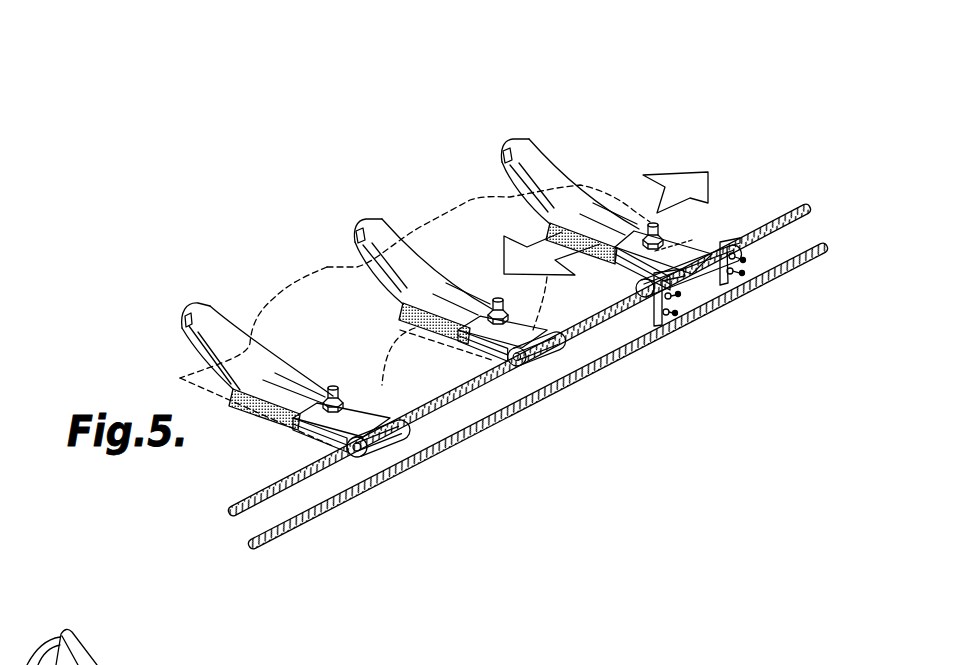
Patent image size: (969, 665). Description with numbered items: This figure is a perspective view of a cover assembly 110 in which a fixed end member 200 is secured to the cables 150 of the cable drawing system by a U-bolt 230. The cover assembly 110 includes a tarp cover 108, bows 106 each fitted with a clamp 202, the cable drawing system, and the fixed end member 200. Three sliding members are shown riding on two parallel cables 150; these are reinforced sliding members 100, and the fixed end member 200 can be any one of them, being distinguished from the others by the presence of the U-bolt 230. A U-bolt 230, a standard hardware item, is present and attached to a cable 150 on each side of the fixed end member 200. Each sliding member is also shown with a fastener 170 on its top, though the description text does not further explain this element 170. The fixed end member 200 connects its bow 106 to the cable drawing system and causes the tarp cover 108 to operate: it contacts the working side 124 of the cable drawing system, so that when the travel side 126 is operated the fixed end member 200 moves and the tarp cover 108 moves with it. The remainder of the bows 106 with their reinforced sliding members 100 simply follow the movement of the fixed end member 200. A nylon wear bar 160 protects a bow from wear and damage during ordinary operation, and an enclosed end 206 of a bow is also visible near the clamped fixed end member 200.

The reinforced sliding member 100 is at (336, 376).
The bow 106 is at (377, 228).
The tarp cover 108 is at (300, 292).
The cover assembly 110 is at (640, 135).
The working side 124 is at (768, 227).
The travel side 126 is at (777, 268).
The cable 150 is at (612, 352).
The nylon wear bar 160 is at (292, 440).
The fastener nut 170 is at (336, 392).
The fixed end member 200 is at (606, 154).
The clamp 202 is at (625, 198).
The enclosed end 206 is at (687, 300).
The U-bolt 230 is at (731, 292).